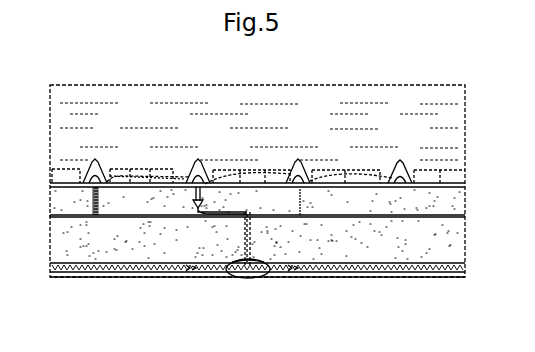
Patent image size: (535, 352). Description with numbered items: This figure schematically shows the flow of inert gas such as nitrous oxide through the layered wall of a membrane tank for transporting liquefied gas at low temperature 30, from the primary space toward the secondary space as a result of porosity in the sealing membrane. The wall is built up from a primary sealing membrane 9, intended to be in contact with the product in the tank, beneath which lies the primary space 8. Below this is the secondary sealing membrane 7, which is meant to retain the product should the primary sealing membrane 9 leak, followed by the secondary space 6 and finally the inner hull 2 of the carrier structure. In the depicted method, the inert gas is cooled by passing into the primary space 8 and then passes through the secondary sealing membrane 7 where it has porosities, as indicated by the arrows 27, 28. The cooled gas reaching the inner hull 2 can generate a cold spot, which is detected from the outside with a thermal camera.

The liquefied gas at low temperature 30 is at (437, 146).
The primary sealing membrane 9 is at (447, 178).
The primary space 8 is at (447, 203).
The secondary space 6 is at (447, 233).
The secondary sealing membrane 7 is at (72, 217).
The inner hull 2 is at (440, 278).
The arrow 27 is at (190, 273).
The arrow 28 is at (292, 273).